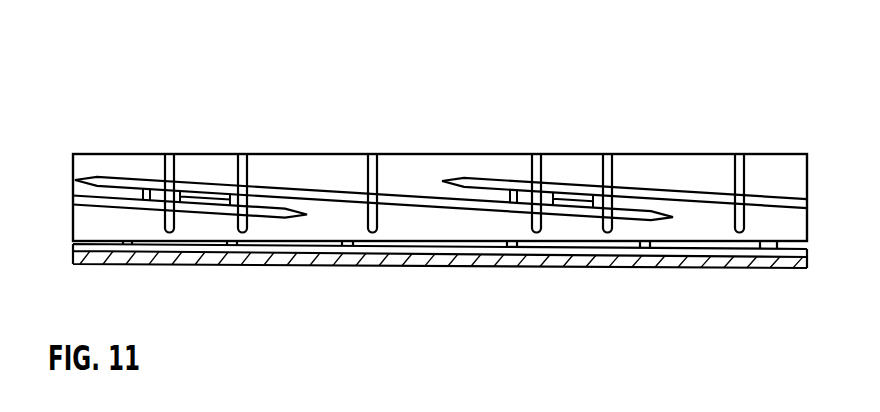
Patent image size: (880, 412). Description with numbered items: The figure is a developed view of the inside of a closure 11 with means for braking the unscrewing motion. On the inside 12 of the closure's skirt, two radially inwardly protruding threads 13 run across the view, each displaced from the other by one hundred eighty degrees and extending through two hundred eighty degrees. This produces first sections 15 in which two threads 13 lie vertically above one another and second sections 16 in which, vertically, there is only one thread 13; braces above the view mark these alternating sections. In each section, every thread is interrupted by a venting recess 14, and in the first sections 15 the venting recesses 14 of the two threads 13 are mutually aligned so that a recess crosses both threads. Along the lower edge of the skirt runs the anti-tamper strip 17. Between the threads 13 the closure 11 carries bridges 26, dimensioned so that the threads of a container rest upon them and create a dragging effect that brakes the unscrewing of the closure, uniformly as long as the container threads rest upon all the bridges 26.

The closure 11 is at (441, 146).
The inside 12 is at (478, 223).
The threads 13 is at (213, 213).
The venting recess 14 is at (166, 160).
The first sections 15 is at (52, 62).
The second sections 16 is at (310, 62).
The anti-tamper strip 17 is at (730, 262).
The bridges 26 is at (227, 188).